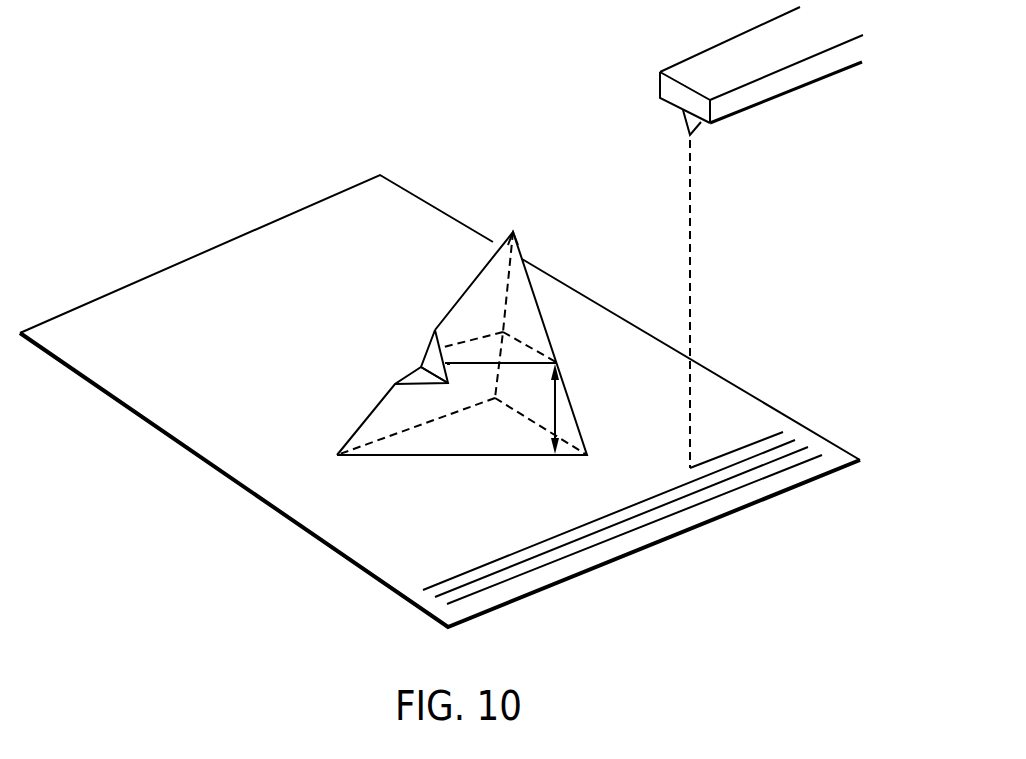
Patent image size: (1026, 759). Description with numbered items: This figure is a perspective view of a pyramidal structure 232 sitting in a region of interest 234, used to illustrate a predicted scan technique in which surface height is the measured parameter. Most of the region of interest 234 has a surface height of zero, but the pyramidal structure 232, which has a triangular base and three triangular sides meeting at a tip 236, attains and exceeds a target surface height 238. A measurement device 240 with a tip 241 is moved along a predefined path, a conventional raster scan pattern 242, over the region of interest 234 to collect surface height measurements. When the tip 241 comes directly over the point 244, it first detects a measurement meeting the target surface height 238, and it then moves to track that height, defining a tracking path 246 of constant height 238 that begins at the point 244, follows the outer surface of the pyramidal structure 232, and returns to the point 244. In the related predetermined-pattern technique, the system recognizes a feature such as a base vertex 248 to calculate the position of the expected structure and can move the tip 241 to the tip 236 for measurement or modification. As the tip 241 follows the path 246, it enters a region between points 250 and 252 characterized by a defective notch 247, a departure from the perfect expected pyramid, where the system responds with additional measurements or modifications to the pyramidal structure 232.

The pyramidal structure 232 is at (480, 458).
The region of interest 234 is at (357, 180).
The tip 236 is at (517, 227).
The target surface height 238 is at (563, 406).
The measurement device 240 is at (687, 58).
The tip 241 is at (680, 118).
The raster scan pattern 242 is at (762, 436).
The point 244 is at (563, 363).
The tracking path 246 is at (527, 333).
The defective notch 247 is at (412, 358).
The base vertex 248 is at (593, 449).
The point 250 is at (420, 347).
The point 252 is at (449, 364).